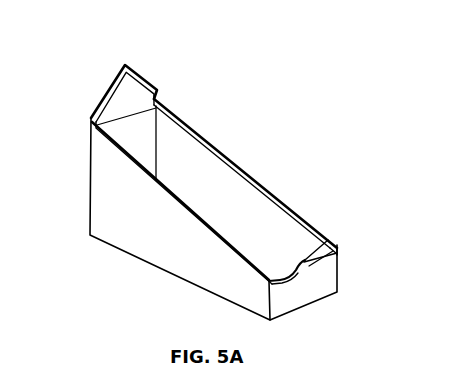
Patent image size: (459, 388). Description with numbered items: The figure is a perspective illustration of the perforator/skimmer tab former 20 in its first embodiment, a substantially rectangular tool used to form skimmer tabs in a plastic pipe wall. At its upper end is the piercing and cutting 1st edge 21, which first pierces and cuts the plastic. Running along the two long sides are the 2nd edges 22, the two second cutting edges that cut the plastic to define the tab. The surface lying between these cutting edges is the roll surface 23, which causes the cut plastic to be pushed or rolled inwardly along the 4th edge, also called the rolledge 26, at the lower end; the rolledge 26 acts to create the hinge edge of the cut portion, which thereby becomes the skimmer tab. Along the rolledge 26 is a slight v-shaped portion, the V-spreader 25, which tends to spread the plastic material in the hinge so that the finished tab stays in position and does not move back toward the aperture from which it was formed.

The perforator/skimmer tab former 20 is at (330, 181).
The perforator/skimmer tab former 1st edge 21 is at (138, 71).
The perforator/skimmer tab former 2nd edge 22 is at (113, 151).
The perforator/skimmer tab former roll surface 23 is at (212, 172).
The perforator/skimmer tab former V-spreader 25 is at (317, 229).
The perforator/skimmer tab former role edge/4th edge 26 is at (310, 266).